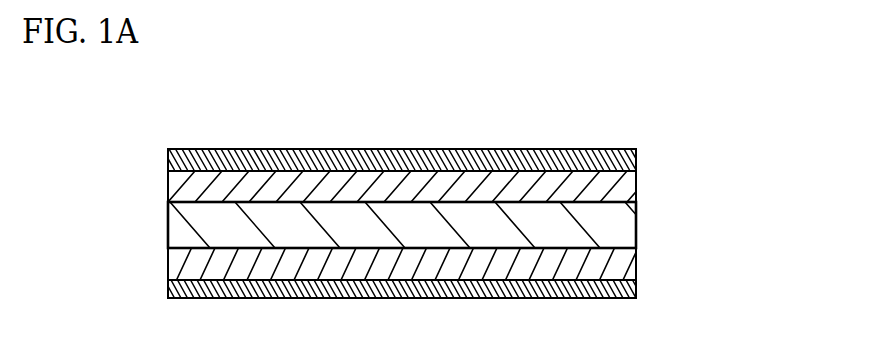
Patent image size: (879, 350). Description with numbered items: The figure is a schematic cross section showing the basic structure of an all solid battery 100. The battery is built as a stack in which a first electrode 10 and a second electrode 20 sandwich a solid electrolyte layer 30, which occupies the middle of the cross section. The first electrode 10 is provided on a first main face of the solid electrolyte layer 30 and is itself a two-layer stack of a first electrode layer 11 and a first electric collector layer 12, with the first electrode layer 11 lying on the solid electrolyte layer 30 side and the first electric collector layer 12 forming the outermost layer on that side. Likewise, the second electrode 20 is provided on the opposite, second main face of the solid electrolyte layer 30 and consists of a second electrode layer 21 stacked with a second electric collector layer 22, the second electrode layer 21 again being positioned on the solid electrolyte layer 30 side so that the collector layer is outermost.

The all solid battery 100 is at (817, 63).
The second electrode 20 is at (738, 130).
The second electric collector layer 22 is at (627, 155).
The second electrode layer 21 is at (625, 187).
The solid electrolyte layer 30 is at (183, 236).
The first electrode 10 is at (738, 243).
The first electrode layer 11 is at (625, 260).
The first electric collector layer 12 is at (625, 288).